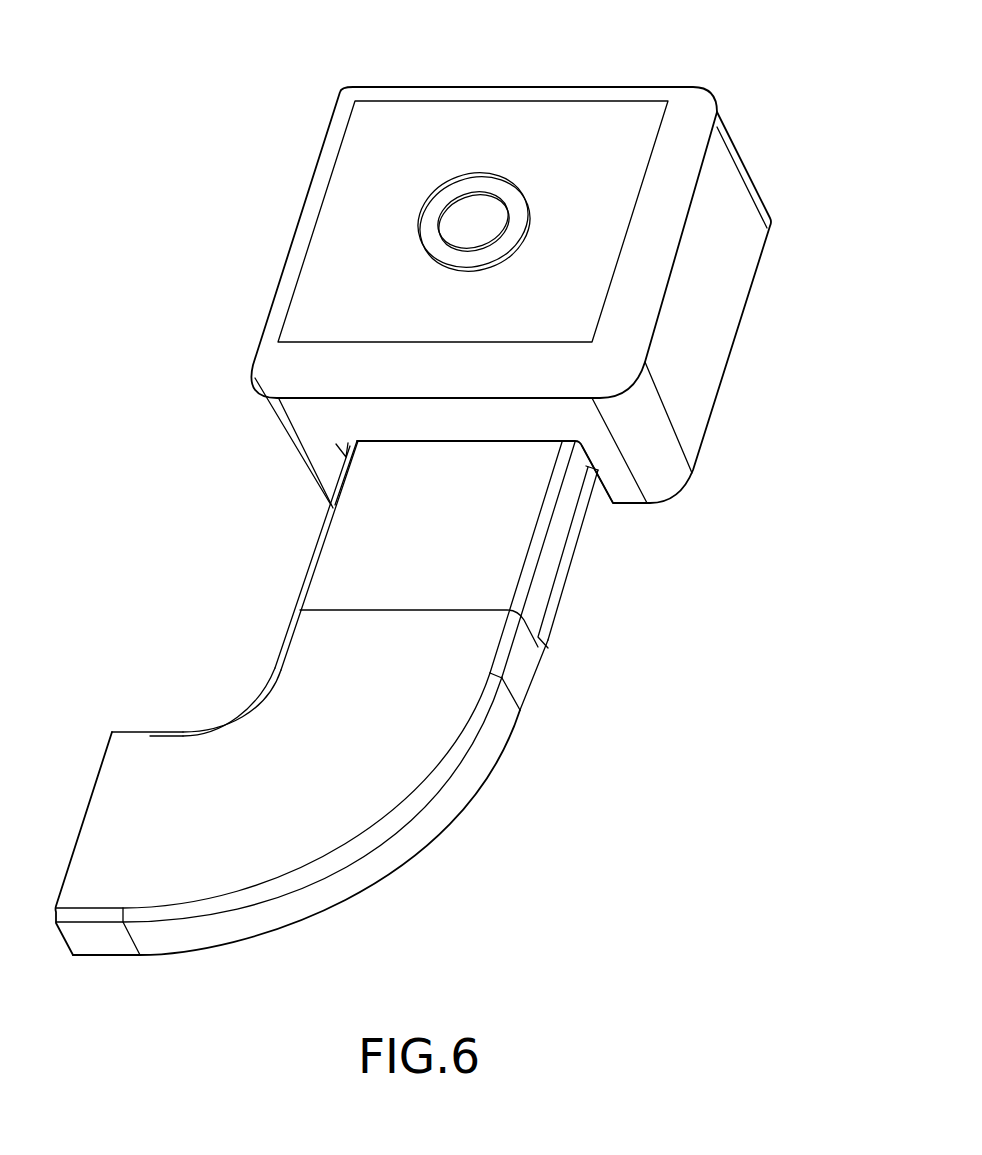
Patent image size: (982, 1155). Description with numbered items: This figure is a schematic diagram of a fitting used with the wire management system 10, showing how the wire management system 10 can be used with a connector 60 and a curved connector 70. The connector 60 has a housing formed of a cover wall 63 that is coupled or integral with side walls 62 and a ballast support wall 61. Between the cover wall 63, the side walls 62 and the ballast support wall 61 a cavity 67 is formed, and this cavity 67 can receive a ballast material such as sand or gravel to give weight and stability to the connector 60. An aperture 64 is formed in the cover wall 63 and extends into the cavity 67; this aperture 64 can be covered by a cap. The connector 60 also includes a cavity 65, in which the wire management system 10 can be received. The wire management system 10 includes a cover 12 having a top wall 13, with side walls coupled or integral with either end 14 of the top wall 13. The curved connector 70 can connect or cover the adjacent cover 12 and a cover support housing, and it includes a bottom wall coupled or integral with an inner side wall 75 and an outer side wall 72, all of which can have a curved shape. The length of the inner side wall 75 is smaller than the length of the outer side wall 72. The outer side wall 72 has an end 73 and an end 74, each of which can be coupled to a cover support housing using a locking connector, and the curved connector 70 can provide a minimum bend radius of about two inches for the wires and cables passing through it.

The wire management system 10 is at (317, 598).
The cover 12 is at (338, 570).
The top wall 13 is at (348, 532).
The end 14 is at (589, 512).
The connector 60 is at (523, 95).
The ballast support wall 61 is at (347, 447).
The side walls 62 is at (733, 205).
The cover wall 63 is at (618, 115).
The aperture 64 is at (472, 212).
The cavity 65 is at (612, 504).
The cavity 67 is at (323, 365).
The curved connector 70 is at (250, 741).
The outer side wall 72 is at (370, 888).
The end 73 is at (523, 682).
The end 74 is at (93, 958).
The inner side wall 75 is at (177, 738).